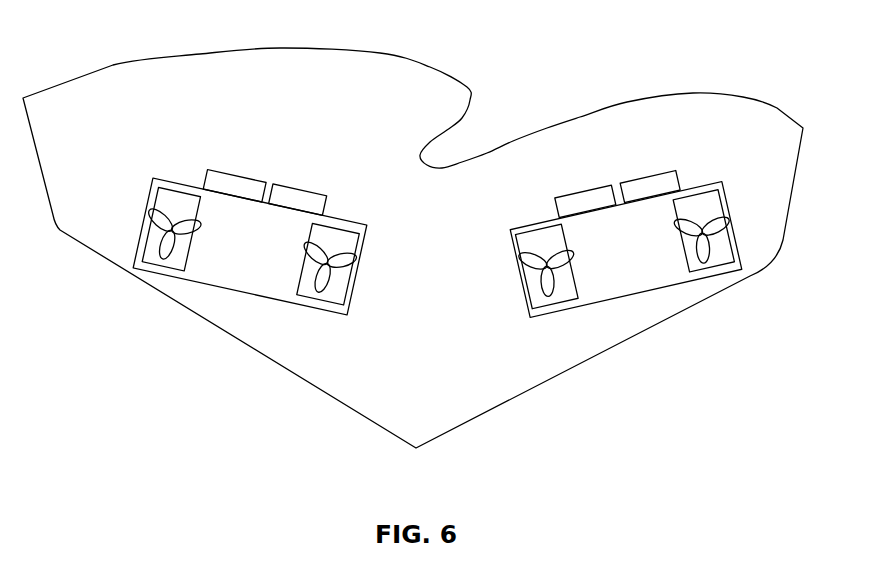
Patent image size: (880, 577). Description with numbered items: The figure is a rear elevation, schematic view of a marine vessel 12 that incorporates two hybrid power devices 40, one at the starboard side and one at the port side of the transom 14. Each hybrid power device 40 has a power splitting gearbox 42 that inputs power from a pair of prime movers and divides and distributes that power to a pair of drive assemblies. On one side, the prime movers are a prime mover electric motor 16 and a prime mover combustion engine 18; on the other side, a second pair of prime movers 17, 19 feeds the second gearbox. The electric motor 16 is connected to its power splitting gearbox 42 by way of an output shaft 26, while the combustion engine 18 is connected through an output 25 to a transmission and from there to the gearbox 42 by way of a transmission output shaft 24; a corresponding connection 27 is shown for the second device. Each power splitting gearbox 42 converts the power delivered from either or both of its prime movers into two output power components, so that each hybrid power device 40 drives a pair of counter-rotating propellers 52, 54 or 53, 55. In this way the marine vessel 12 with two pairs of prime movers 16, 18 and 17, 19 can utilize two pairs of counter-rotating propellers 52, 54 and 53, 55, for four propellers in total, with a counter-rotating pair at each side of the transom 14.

The marine vessel 12 is at (782, 103).
The transom 14 is at (88, 130).
The hybrid power device 40 is at (283, 98).
The power splitting gearbox 42 is at (240, 292).
The prime mover electric motor 16 is at (245, 173).
The prime mover combustion engine 18 is at (297, 187).
The prime mover 19 is at (590, 187).
The prime mover 17 is at (653, 173).
The transmission output shaft 24 is at (334, 240).
The output shaft 26 is at (180, 215).
The output 25 is at (547, 255).
The fan 27 is at (708, 228).
The counter-rotating propeller 52 is at (354, 263).
The counter-rotating propeller 54 is at (152, 210).
The counter-rotating propeller 53 is at (522, 257).
The counter-rotating propeller 55 is at (728, 225).